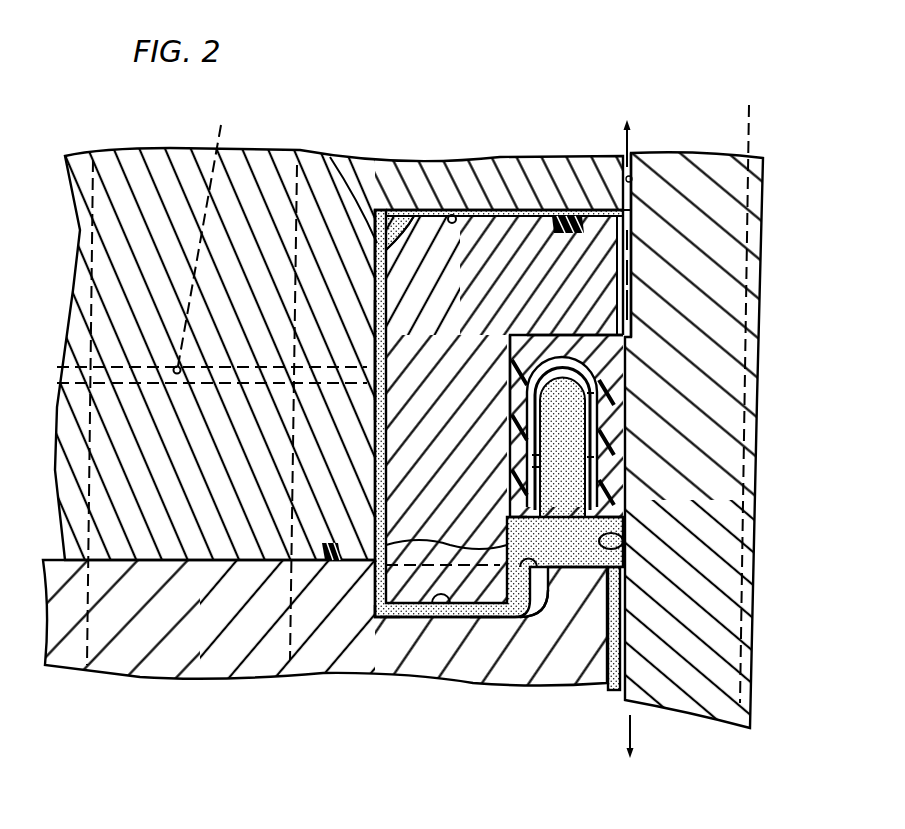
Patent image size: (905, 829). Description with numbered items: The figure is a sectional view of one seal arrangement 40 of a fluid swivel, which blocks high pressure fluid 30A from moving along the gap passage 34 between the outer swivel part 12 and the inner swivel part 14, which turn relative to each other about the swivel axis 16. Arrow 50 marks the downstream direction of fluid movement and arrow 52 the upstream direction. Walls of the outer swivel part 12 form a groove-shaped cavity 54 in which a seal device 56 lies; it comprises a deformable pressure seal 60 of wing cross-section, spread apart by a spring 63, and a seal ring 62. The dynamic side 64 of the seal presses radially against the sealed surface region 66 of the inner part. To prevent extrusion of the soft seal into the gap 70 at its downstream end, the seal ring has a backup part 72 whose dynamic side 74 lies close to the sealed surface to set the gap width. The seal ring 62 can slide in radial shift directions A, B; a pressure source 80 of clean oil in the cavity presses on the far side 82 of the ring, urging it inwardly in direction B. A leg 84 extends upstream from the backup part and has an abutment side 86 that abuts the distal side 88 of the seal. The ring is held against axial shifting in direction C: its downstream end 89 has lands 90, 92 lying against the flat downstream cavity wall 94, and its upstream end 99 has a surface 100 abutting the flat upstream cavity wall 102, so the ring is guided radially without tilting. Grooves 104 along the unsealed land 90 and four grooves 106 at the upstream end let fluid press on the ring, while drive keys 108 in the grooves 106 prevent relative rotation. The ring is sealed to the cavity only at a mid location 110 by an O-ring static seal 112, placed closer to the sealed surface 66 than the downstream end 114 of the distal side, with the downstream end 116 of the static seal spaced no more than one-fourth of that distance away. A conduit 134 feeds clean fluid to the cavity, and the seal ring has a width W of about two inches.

The outer swivel part 12 is at (136, 152).
The inner swivel part 14 is at (660, 702).
The swivel axis 16 is at (760, 127).
The high pressure fluid 30A is at (578, 552).
The gap passage 34 is at (633, 180).
The seal arrangement 40 is at (398, 92).
The downstream direction arrow 50 is at (613, 690).
The upstream direction arrow 52 is at (632, 730).
The cavity 54 is at (374, 398).
The seal device 56 is at (372, 352).
The pressure seal 60 is at (640, 402).
The seal ring 62 is at (481, 198).
The spring 63 is at (562, 462).
The dynamic side 64 is at (600, 432).
The sealed surface region 66 is at (620, 550).
The gap 70 is at (628, 305).
The backup part 72 is at (630, 275).
The dynamic side of backup part 74 is at (632, 242).
The pressure source 80 is at (374, 400).
The far side 82 is at (232, 560).
The leg 84 is at (512, 352).
The abutment side 86 is at (510, 400).
The distal side of seal 88 is at (545, 340).
The downstream end of seal ring 89 is at (527, 208).
The unsealed land 90 is at (410, 210).
The sealed land 92 is at (629, 176).
The downstream cavity wall 94 is at (449, 213).
The upstream end of seal ring 99 is at (375, 560).
The surface 100 is at (480, 620).
The upstream cavity wall 102 is at (532, 606).
The grooves 104 is at (306, 375).
The grooves 106 is at (441, 604).
The drive keys 108 is at (385, 614).
The mid location 110 is at (567, 214).
The static seal 112 is at (632, 220).
The downstream end of distal side 114 is at (371, 258).
The downstream end of static seal 116 is at (621, 207).
The conduit 134 is at (221, 125).
The width W is at (612, 302).
The radially outward shift direction A is at (464, 65).
The radially inward shift direction B is at (588, 68).
The axial direction C is at (755, 97).